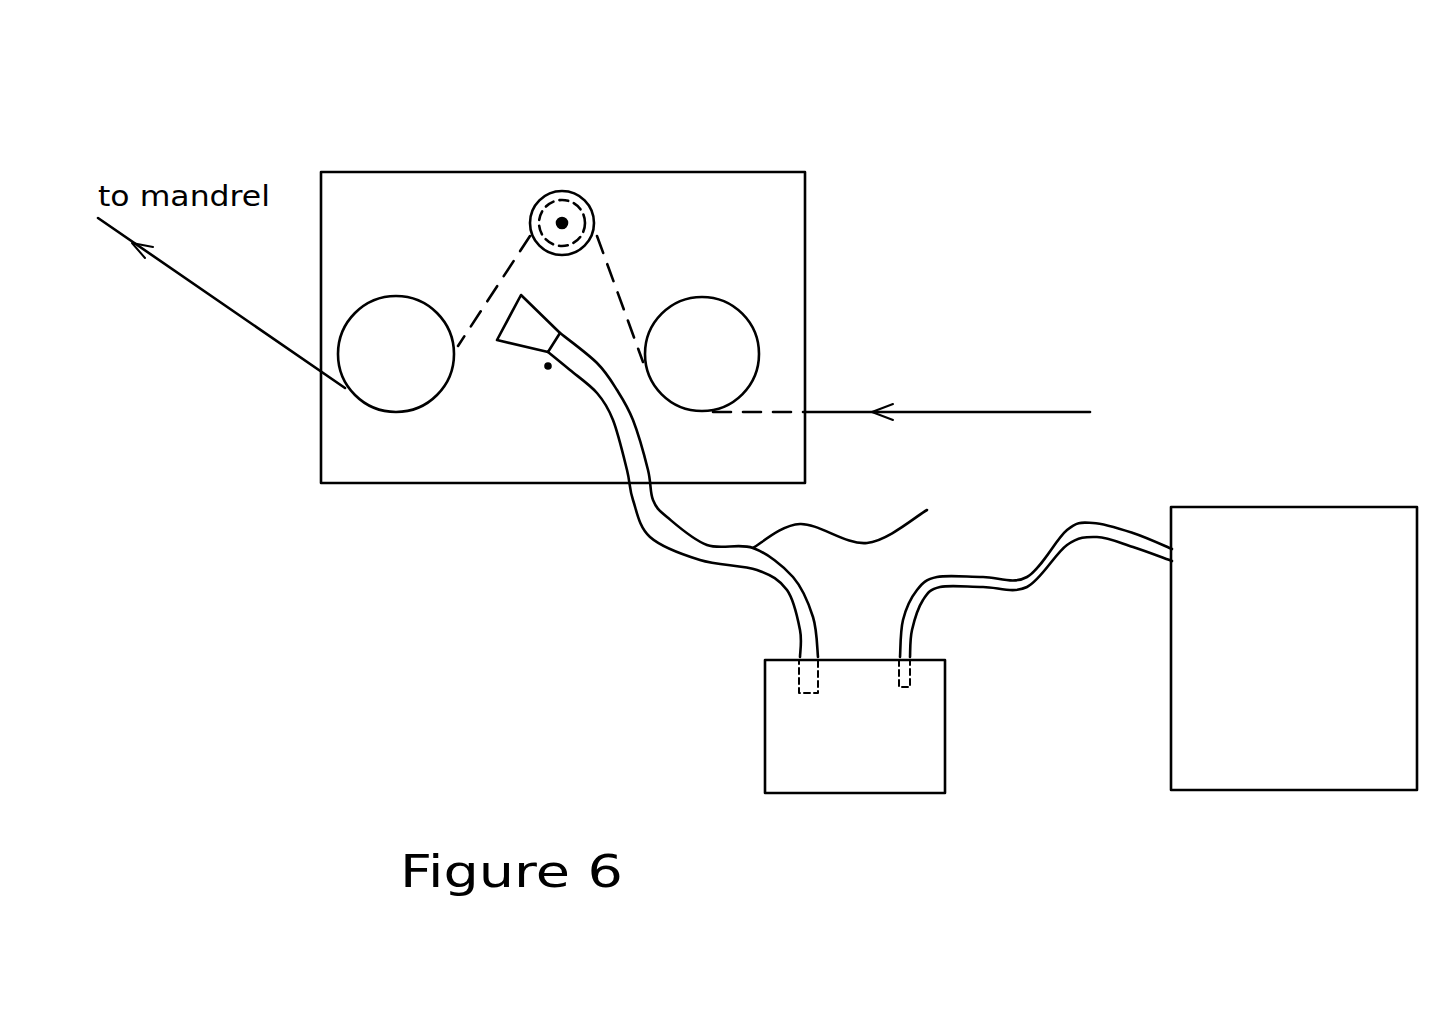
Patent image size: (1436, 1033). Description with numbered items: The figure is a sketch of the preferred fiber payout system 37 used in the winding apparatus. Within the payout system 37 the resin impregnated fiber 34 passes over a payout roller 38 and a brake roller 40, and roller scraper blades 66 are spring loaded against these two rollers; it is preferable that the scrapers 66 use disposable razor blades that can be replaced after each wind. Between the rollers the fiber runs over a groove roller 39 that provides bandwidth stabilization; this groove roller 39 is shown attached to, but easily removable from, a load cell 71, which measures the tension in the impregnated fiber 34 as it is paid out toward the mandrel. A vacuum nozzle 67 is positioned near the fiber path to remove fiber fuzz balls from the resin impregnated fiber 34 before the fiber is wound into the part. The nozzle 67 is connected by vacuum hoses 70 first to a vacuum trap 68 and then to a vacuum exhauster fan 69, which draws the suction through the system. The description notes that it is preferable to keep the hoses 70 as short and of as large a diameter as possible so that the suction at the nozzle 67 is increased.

The impregnated fiber 34 is at (990, 410).
The payout system 37 is at (377, 172).
The payout roller 38 is at (395, 373).
The groove roller 39 is at (552, 195).
The brake roller 40 is at (730, 337).
The roller scraper blades 66 is at (393, 297).
The vacuum nozzle 67 is at (520, 350).
The vacuum trap 68 is at (765, 705).
The vacuum exhauster fan 69 is at (1172, 675).
The vacuum hoses 70 is at (937, 577).
The load cell 71 is at (572, 203).